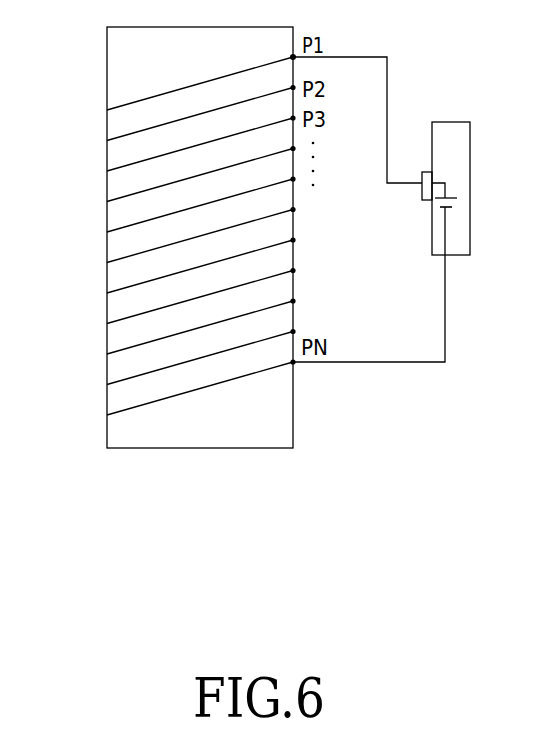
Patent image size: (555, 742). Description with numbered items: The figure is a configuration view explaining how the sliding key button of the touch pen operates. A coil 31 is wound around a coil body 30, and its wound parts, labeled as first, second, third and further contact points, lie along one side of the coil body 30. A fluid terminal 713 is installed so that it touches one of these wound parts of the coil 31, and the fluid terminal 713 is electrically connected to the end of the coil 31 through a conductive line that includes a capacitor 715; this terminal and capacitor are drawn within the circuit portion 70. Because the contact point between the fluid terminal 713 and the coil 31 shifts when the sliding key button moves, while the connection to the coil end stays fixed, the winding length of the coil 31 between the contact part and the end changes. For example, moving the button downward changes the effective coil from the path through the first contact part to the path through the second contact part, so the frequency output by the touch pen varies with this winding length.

The coil body 30 is at (120, 82).
The coil 31 is at (138, 161).
The detection circuit 70 is at (470, 150).
The fluid terminal 713 is at (423, 172).
The capacitor 715 is at (455, 199).